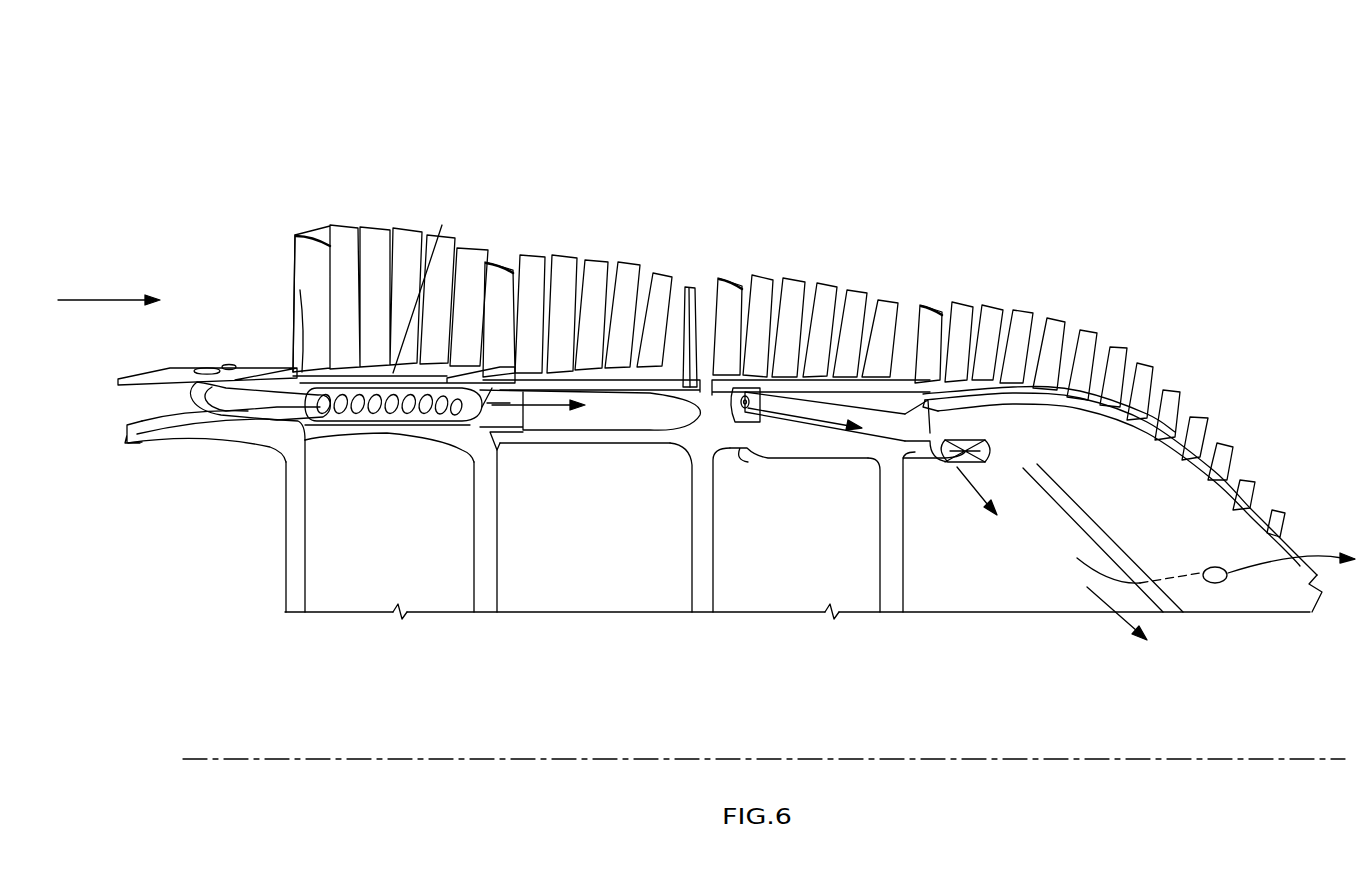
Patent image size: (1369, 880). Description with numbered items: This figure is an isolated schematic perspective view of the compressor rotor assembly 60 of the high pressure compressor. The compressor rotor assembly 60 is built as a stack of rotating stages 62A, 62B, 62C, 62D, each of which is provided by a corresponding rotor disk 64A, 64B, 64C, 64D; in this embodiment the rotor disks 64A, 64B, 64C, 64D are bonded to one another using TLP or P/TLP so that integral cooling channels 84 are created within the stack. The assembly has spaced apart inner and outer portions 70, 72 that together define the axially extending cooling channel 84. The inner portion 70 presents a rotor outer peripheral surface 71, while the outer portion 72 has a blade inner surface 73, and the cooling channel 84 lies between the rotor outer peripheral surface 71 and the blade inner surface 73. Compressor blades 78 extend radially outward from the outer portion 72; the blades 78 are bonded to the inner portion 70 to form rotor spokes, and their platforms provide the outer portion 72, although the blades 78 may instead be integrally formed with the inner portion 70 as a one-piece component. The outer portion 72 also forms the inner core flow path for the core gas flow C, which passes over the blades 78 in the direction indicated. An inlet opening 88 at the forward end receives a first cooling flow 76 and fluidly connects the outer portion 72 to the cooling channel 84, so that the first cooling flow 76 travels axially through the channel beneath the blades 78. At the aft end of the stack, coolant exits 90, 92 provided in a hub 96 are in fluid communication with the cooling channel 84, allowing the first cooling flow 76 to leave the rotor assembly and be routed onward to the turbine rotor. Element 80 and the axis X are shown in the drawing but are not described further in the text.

The compressor rotor assembly 60 is at (1036, 117).
The rotating stage 62A is at (433, 203).
The rotating stage 62B is at (594, 203).
The rotating stage 62C is at (825, 228).
The rotating stage 62D is at (1011, 229).
The rotor disk 64A is at (280, 582).
The rotor disk 64B is at (467, 582).
The rotor disk 64C is at (685, 582).
The rotor disk 64D is at (873, 582).
The inner portion 70 is at (388, 437).
The rotor outer peripheral surface 71 is at (487, 440).
The outer portion 72 is at (442, 225).
The blade inner surface 73 is at (487, 403).
The first cooling flow 76 is at (568, 402).
The compressor blades 78 is at (297, 240).
The blade root 80 is at (303, 305).
The cooling channel 84 is at (610, 428).
The inlet opening 88 is at (234, 412).
The coolant exit 90 is at (962, 421).
The coolant exit 92 is at (1217, 583).
The hub 96 is at (1078, 510).
The core gas flow C is at (103, 304).
The engine axis X is at (1198, 759).